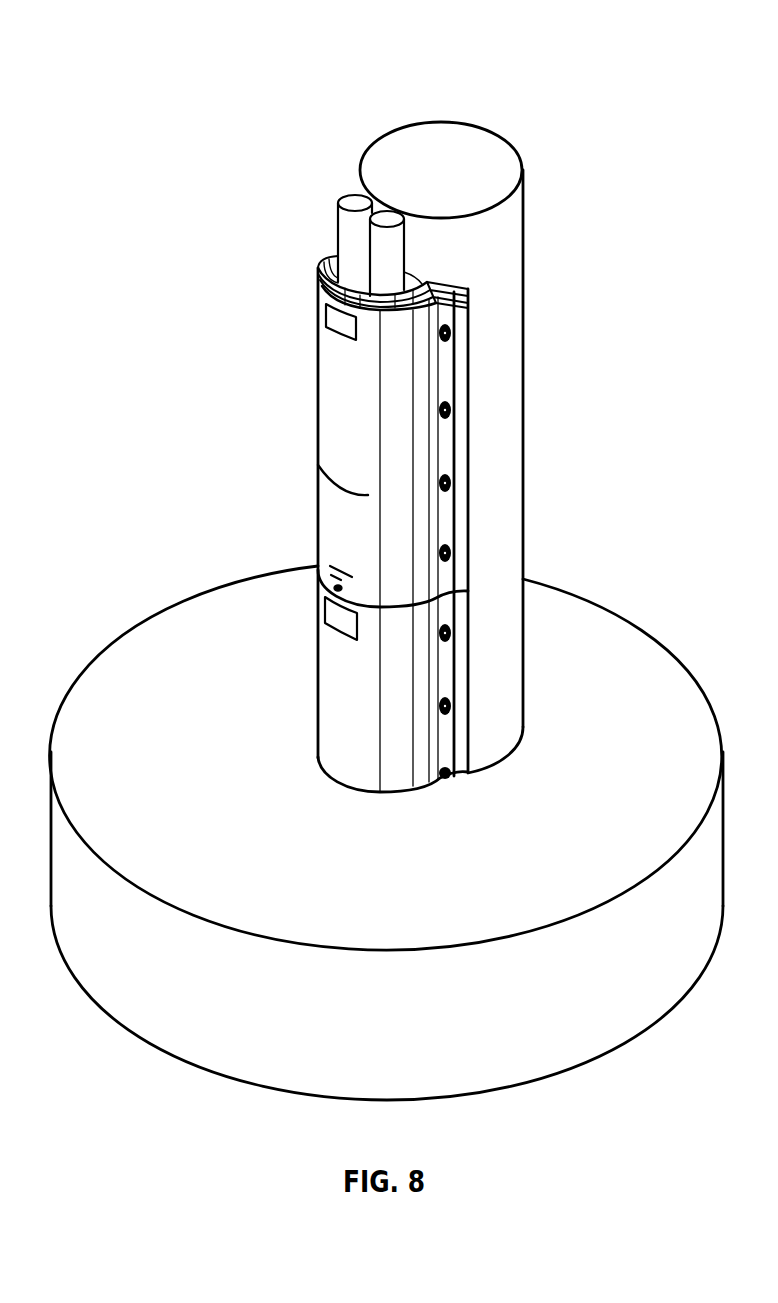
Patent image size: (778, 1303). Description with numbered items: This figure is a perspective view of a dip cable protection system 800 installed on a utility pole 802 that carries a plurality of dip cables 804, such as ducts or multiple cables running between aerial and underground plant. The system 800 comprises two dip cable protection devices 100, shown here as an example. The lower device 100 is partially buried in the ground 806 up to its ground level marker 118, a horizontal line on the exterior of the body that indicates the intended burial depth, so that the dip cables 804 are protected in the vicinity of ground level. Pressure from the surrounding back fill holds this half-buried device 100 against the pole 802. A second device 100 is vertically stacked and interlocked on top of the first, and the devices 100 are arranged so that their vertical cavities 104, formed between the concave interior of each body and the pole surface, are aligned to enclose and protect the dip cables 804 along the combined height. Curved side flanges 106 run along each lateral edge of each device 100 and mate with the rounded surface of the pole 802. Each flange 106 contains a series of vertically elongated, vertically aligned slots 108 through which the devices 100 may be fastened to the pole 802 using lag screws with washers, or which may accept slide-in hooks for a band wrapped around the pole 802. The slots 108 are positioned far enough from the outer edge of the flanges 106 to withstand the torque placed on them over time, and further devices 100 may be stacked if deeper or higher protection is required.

The dip cable protection system 800 is at (448, 83).
The utility pole 802 is at (490, 303).
The dip cables 804 is at (386, 217).
The ground 806 is at (192, 643).
The dip cable protection device 100 is at (303, 432).
The vertical cavity 104 is at (333, 240).
The side flanges 106 is at (453, 270).
The slots 108 is at (460, 333).
The ground level marker 118 is at (322, 775).